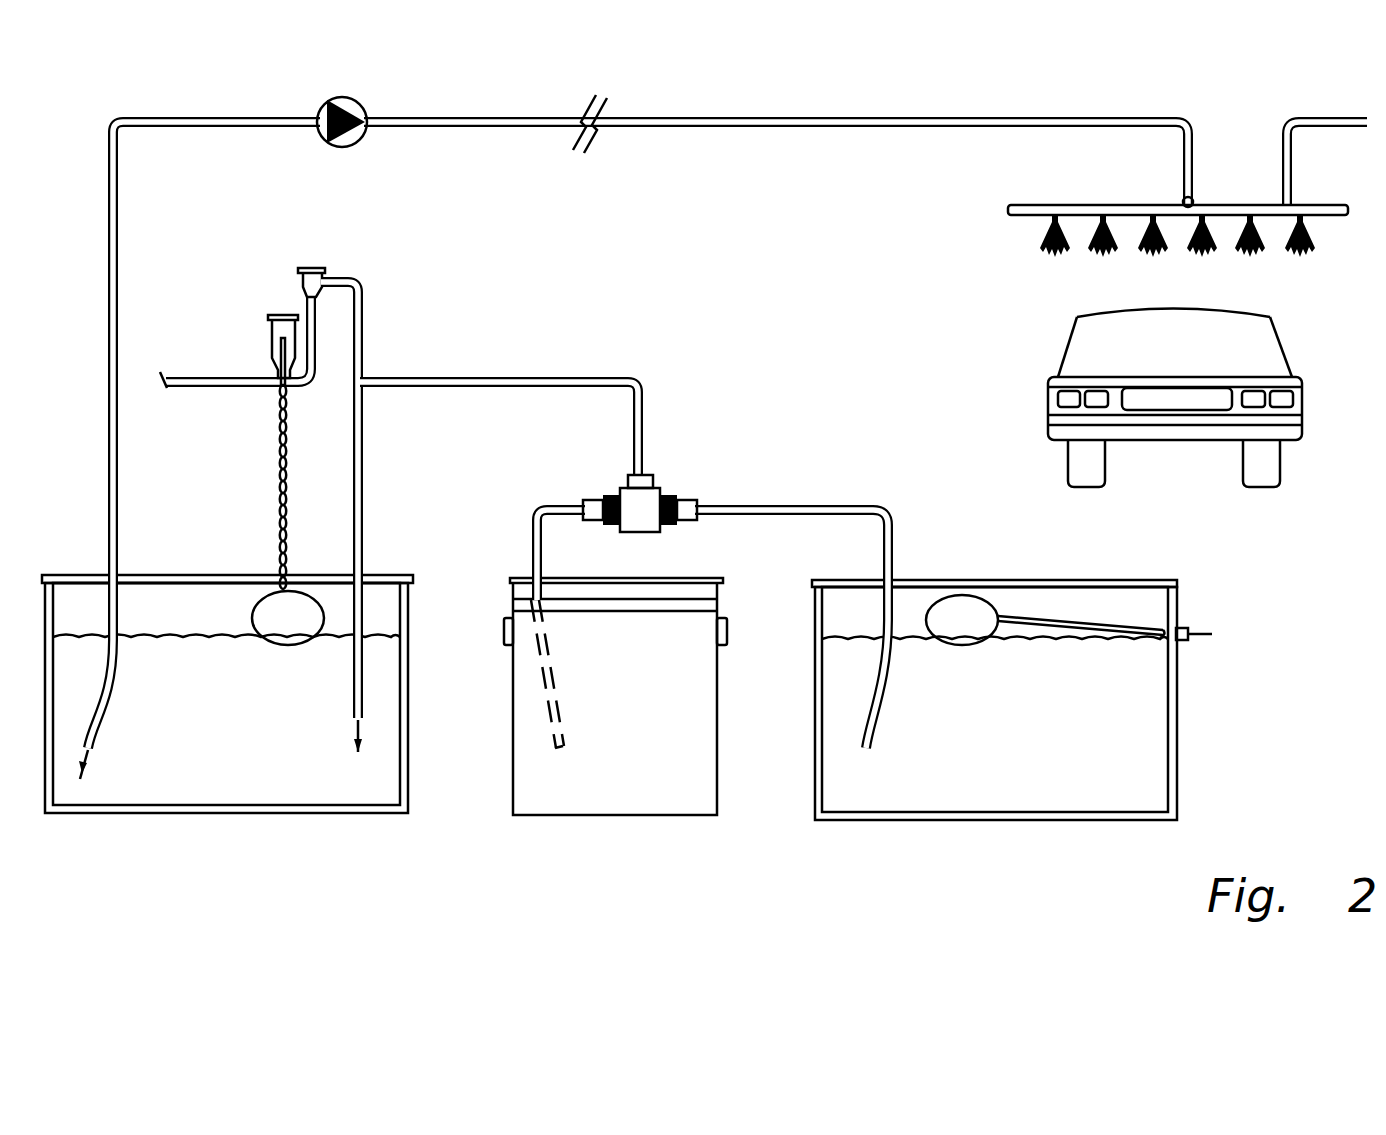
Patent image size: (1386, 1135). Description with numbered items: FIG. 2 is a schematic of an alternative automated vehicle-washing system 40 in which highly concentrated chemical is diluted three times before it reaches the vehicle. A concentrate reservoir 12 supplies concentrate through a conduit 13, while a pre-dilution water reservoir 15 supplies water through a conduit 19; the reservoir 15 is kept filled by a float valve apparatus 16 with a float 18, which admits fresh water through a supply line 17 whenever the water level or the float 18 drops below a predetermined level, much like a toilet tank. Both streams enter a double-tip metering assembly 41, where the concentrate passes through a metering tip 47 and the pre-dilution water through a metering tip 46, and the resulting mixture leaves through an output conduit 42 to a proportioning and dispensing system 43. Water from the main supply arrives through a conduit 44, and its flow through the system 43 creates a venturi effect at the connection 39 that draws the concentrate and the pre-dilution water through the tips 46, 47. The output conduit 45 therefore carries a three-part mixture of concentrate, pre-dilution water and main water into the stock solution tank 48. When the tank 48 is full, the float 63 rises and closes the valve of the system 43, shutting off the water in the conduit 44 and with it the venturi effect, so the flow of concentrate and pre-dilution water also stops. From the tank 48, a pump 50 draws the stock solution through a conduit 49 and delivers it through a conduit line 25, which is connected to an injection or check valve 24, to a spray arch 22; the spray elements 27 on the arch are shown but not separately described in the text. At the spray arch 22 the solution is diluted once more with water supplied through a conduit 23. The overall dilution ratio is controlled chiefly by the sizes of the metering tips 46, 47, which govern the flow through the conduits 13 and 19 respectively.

The concentrate reservoir 12 is at (608, 815).
The conduit 13 is at (540, 507).
The pre-dilution water reservoir 15 is at (1186, 576).
The float valve apparatus 16 is at (1069, 613).
The supply line 17 is at (1195, 638).
The float 18 is at (960, 596).
The conduit 19 is at (858, 506).
The spray arch 22 is at (1020, 205).
The conduit 23 is at (1340, 121).
The injection or check valve 24 is at (1184, 200).
The conduit line 25 is at (822, 130).
The spray nozzles 27 is at (1141, 269).
The connection 39 is at (367, 377).
The alternative system 40 is at (236, 433).
The double-tip metering assembly 41 is at (665, 487).
The output conduit 42 is at (645, 394).
The proportioning and dispensing system 43 is at (266, 342).
The conduit 44 is at (170, 373).
The output conduit 45 is at (363, 555).
The metering tip 46 is at (687, 500).
The metering tip 47 is at (597, 500).
The stock solution tank 48 is at (210, 814).
The conduit 49 is at (140, 127).
The pump 50 is at (361, 103).
The float 63 is at (268, 590).